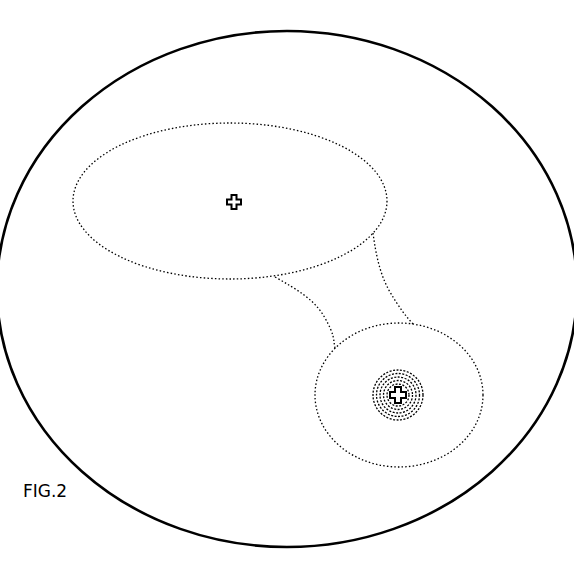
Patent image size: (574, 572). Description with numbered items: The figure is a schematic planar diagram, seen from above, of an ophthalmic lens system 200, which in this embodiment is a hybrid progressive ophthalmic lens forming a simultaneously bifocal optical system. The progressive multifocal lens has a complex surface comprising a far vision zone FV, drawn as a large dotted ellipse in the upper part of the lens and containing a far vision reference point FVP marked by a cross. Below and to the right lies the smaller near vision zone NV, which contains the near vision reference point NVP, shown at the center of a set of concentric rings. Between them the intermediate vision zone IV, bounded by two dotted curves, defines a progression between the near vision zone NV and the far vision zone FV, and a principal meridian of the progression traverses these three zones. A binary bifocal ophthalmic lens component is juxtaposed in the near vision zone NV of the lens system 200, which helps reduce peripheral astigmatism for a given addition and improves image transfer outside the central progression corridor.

The ophthalmic lens system 200 is at (495, 473).
The far vision zone FV is at (204, 282).
The far vision reference point FVP is at (230, 208).
The intermediate vision zone IV is at (322, 300).
The near vision zone NV is at (360, 457).
The near vision reference point NVP is at (378, 406).